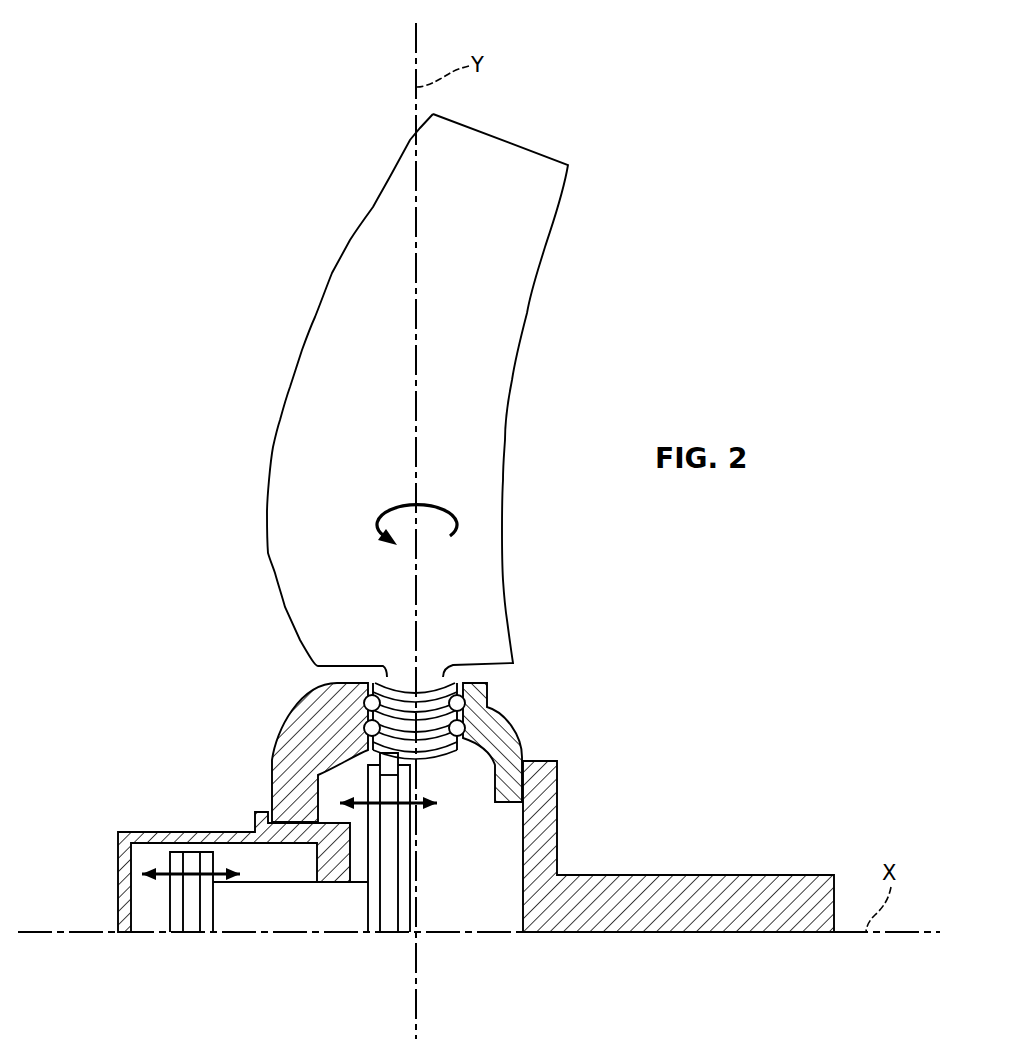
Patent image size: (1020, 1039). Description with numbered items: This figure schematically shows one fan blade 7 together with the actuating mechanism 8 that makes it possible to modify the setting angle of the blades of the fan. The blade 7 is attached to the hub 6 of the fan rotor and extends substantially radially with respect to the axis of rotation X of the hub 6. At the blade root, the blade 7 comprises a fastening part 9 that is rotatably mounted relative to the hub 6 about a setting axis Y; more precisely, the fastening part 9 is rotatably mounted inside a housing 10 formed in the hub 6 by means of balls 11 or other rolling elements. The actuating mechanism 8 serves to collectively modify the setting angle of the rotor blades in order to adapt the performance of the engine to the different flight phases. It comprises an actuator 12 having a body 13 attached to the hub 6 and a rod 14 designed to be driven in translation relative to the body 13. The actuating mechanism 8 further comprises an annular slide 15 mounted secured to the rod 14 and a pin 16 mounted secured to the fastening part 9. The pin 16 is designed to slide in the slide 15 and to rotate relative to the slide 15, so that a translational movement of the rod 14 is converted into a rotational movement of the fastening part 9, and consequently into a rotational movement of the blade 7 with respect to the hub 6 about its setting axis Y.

The hub 6 is at (303, 743).
The blade 7 is at (452, 415).
The actuating mechanism 8 is at (178, 773).
The fastening part 9 is at (427, 735).
The housing 10 is at (458, 742).
The balls 11 is at (458, 728).
The actuator 12 is at (127, 883).
The body 13 is at (198, 854).
The rod 14 is at (292, 922).
The annular slide 15 is at (387, 922).
The pin 16 is at (388, 762).